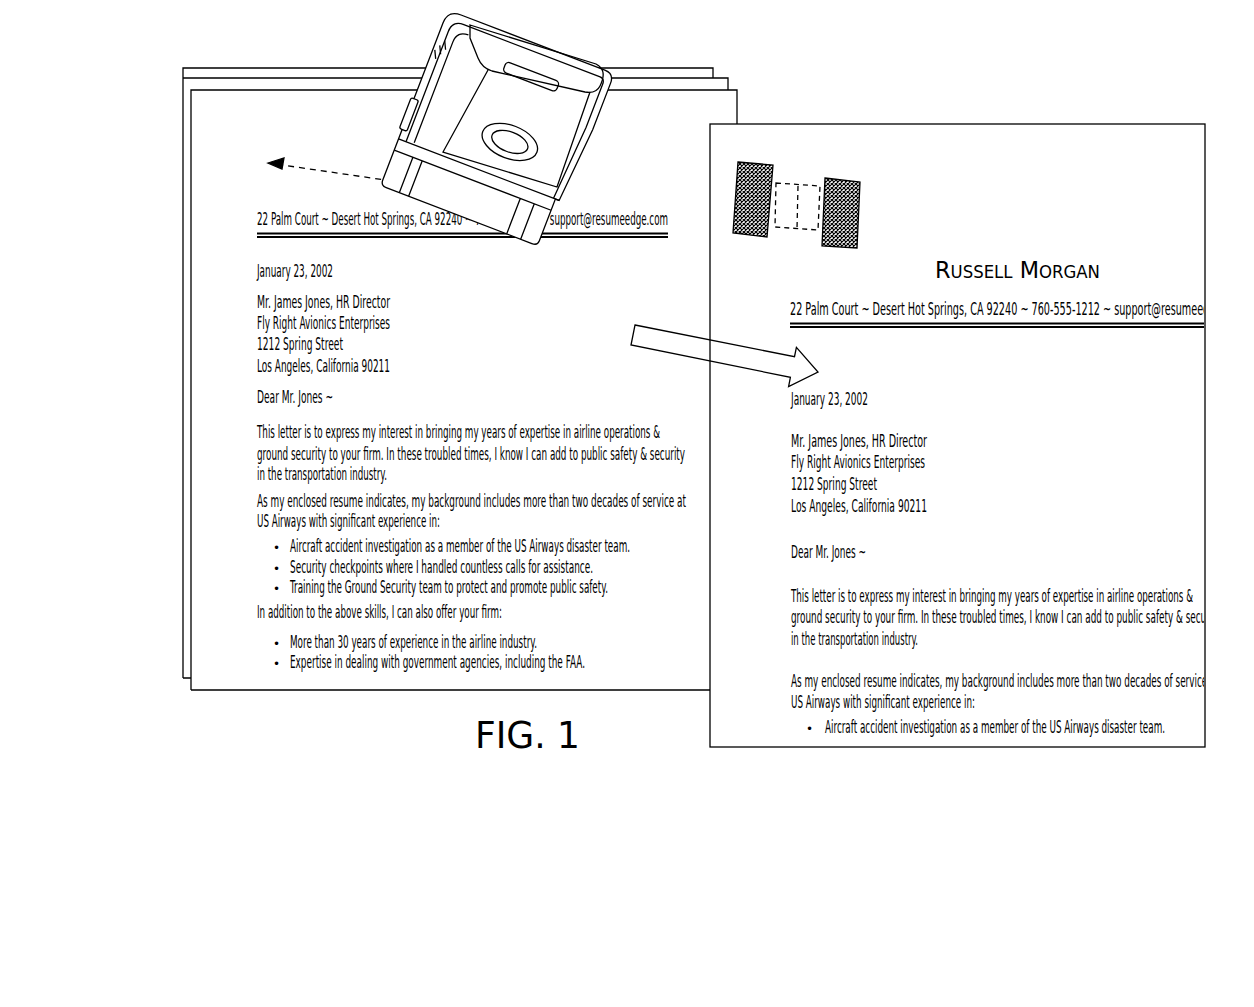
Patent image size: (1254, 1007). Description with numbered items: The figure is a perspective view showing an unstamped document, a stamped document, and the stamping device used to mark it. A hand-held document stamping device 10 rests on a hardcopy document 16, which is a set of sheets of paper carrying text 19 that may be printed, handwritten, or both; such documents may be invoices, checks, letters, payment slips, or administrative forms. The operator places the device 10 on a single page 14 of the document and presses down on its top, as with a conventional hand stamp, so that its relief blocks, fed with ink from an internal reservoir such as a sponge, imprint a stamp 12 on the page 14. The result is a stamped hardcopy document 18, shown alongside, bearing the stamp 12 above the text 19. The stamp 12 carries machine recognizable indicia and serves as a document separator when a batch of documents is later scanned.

The hand-held document stamping device 10 is at (410, 118).
The stamp 12 is at (876, 200).
The single page 14 is at (1068, 137).
The hardcopy document 16 is at (716, 85).
The stamped hardcopy document 18 is at (968, 93).
The text 19 is at (590, 660).